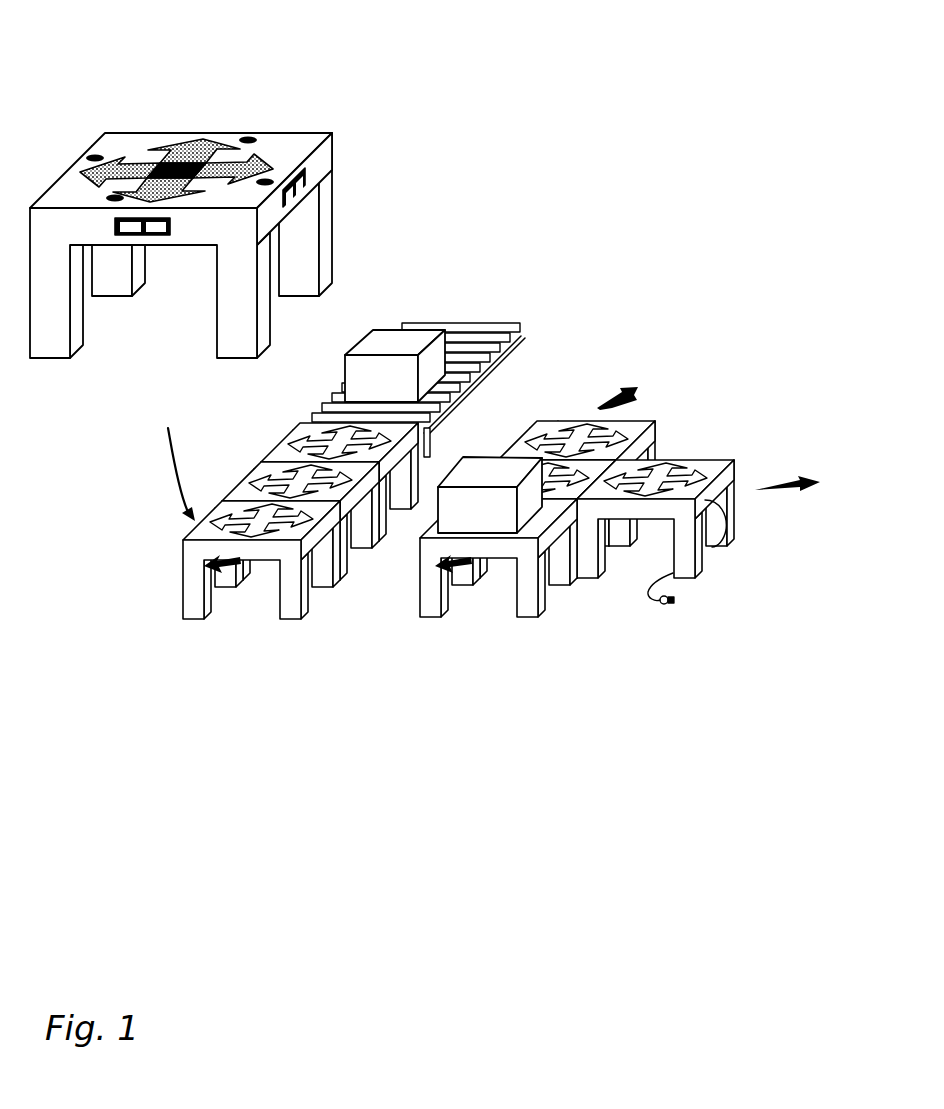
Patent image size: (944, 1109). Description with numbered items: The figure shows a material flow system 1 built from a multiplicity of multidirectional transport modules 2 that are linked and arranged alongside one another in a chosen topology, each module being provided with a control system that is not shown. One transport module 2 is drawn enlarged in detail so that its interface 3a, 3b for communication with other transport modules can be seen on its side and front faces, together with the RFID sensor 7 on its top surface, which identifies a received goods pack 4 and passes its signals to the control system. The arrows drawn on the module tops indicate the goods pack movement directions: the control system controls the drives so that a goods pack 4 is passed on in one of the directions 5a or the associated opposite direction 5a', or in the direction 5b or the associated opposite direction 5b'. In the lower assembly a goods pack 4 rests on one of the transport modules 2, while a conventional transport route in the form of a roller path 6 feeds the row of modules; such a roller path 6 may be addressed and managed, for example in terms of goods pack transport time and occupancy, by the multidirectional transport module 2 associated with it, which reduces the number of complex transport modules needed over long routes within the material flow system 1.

The material flow system 1 is at (728, 293).
The multidirectional transport module 2 is at (432, 600).
The interface 3a is at (305, 182).
The interface 3b is at (153, 235).
The goods pack 4 is at (493, 472).
The goods pack movement direction 5a is at (198, 86).
The opposite goods pack movement direction 5a' is at (159, 127).
The goods pack movement direction 5b is at (106, 122).
The opposite goods pack movement direction 5b' is at (266, 114).
The roller path 6 is at (498, 328).
The RFID sensor 7 is at (172, 163).